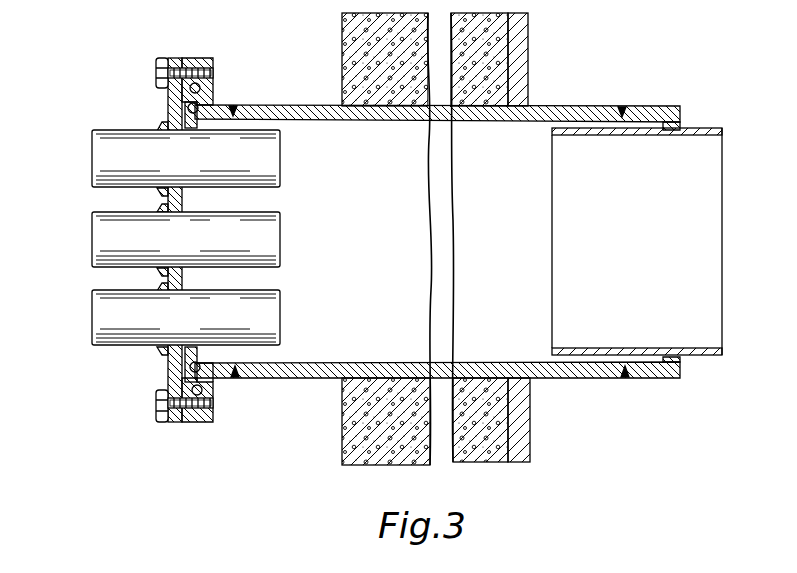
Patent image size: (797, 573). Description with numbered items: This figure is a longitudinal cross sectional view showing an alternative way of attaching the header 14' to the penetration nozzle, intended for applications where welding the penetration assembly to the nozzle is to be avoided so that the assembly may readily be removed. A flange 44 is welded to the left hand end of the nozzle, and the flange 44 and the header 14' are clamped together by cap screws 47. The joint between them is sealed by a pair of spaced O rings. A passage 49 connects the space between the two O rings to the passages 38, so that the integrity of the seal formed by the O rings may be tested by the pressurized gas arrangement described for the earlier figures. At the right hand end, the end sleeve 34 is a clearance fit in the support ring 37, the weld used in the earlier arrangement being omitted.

The header 14' is at (147, 240).
The end sleeve 34 is at (590, 355).
The support ring 37 is at (650, 378).
The passages 38 is at (181, 364).
The flange 44 is at (213, 92).
The cap screws 47 is at (157, 65).
The passage 49 is at (180, 383).